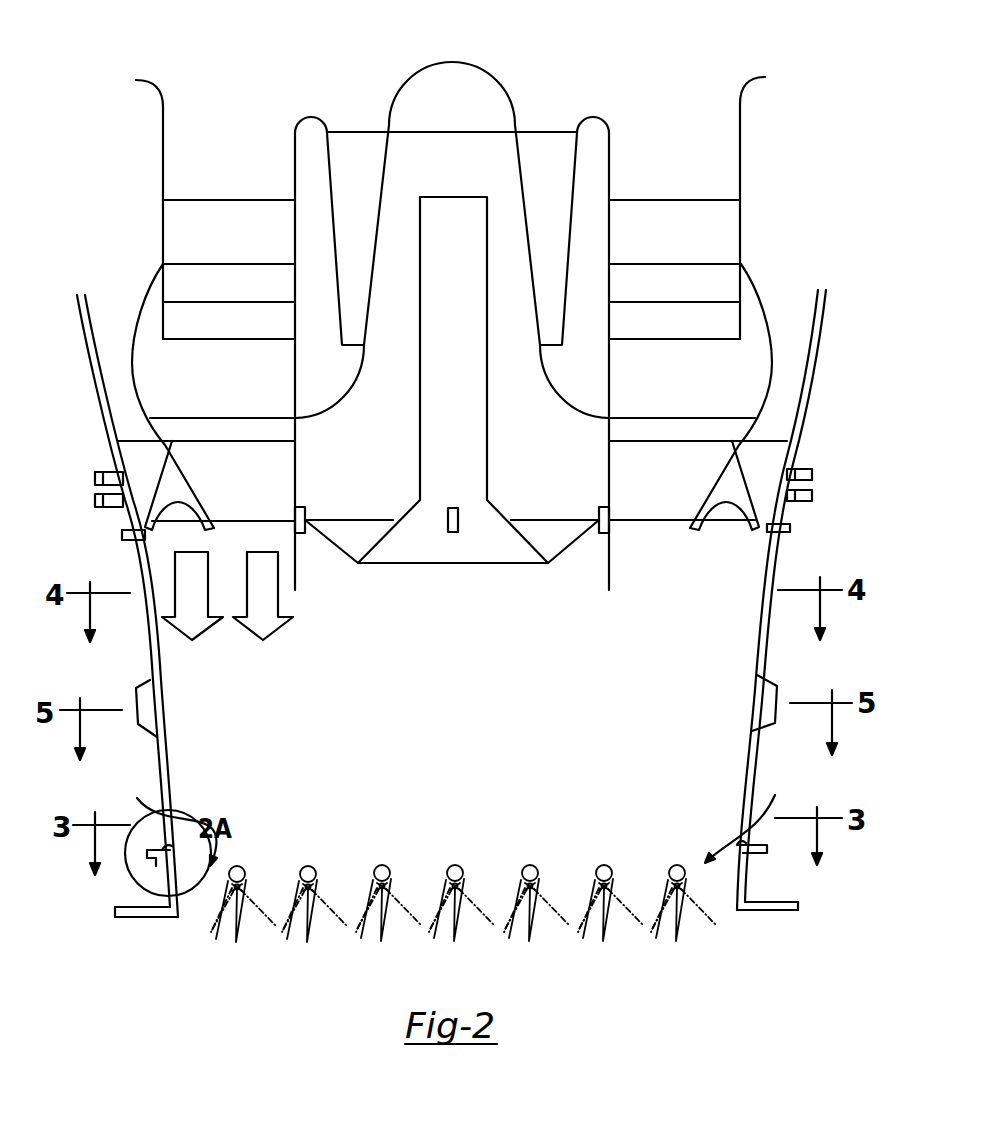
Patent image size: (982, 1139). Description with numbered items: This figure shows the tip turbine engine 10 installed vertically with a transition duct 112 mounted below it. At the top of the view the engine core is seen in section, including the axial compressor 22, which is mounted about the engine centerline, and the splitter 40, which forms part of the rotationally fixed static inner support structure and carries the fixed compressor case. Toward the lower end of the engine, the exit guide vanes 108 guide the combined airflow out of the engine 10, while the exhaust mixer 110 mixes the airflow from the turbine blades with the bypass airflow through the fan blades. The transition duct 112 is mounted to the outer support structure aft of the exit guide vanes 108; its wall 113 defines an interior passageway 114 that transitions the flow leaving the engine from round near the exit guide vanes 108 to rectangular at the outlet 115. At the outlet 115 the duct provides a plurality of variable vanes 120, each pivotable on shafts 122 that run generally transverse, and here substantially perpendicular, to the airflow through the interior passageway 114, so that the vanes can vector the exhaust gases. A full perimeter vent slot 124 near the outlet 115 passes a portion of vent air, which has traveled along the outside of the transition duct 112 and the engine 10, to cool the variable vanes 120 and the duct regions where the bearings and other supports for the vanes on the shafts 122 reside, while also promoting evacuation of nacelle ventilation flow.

The tip turbine engine 10 is at (832, 318).
The axial compressor 22 is at (548, 78).
The splitter 40 is at (609, 130).
The exit guide vanes 108 is at (274, 518).
The exhaust mixer 110 is at (208, 511).
The transition duct 112 is at (767, 628).
The wall 113 is at (758, 613).
The interior passageway 114 is at (747, 720).
The outlet 115 is at (740, 911).
The variable vanes 120 is at (308, 866).
The shafts 122 is at (297, 893).
The full perimeter vent slot 124 is at (156, 866).